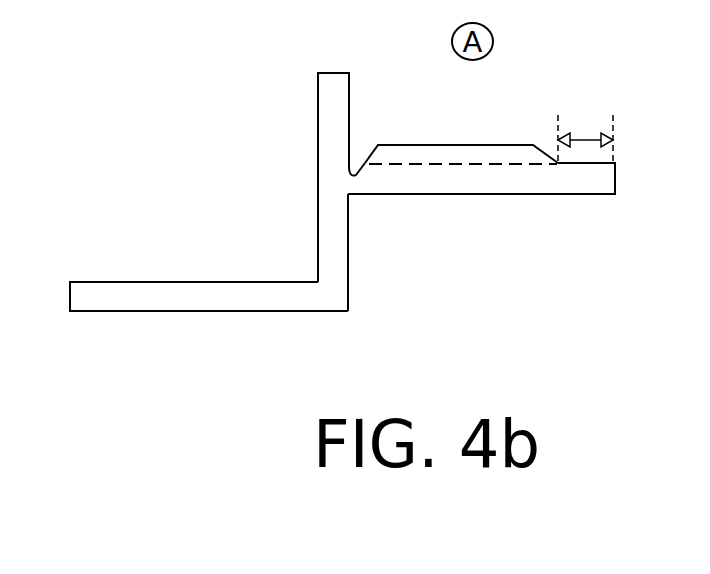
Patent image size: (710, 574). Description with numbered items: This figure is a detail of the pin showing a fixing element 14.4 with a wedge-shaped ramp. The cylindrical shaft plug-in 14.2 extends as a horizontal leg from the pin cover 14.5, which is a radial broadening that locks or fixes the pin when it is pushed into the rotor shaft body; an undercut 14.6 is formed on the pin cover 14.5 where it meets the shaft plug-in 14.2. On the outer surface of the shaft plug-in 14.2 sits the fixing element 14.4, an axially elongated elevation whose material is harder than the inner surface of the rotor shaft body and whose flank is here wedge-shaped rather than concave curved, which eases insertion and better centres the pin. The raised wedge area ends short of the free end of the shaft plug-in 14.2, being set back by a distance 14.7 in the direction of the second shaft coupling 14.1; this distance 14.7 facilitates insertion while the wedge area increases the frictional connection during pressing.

The second shaft coupling 14.1 is at (120, 300).
The shaft plug-in 14.2 is at (455, 180).
The fixing element 14.4 is at (499, 155).
The pin cover 14.5 is at (349, 102).
The undercut 14.6 is at (353, 173).
The distance 14.7 is at (588, 130).